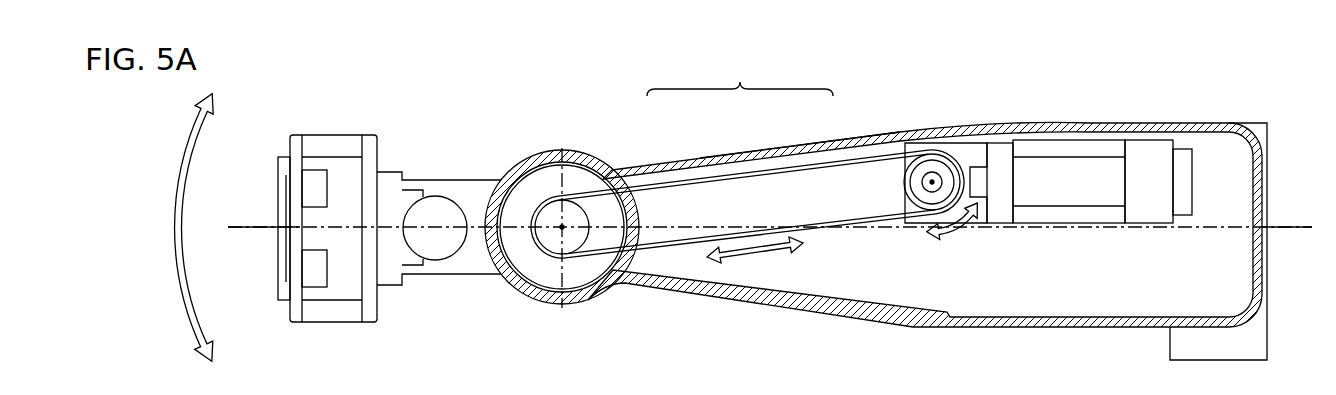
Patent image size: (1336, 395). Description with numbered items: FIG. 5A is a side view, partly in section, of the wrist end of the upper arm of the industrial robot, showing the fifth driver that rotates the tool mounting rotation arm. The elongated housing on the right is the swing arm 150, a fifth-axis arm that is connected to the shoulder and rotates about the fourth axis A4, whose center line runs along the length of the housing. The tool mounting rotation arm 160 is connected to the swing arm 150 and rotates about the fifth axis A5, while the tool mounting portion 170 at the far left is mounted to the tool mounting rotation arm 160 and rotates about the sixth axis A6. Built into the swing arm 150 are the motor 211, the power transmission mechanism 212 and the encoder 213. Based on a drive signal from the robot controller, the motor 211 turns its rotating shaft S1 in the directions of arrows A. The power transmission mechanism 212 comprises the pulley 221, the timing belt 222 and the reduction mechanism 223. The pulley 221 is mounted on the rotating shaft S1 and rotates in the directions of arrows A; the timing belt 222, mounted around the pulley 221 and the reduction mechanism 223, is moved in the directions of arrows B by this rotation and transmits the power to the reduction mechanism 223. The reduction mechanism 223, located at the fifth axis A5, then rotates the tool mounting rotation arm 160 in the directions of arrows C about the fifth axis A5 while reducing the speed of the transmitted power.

The swing arm 150 is at (1094, 112).
The tool mounting rotation arm 160 is at (448, 160).
The tool mounting portion 170 is at (308, 120).
The motor 211 is at (972, 153).
The power transmission mechanism 212 is at (740, 71).
The encoder 213 is at (1183, 182).
The pulley 221 is at (822, 150).
The timing belt 222 is at (765, 171).
The reduction mechanism 223 is at (583, 197).
The rotating shaft S1 is at (930, 179).
The fourth axis A4 is at (1290, 225).
The fifth axis A5 is at (562, 227).
The sixth axis A6 is at (263, 227).
The arrows A is at (957, 234).
The arrows B is at (755, 256).
The arrows C is at (174, 219).